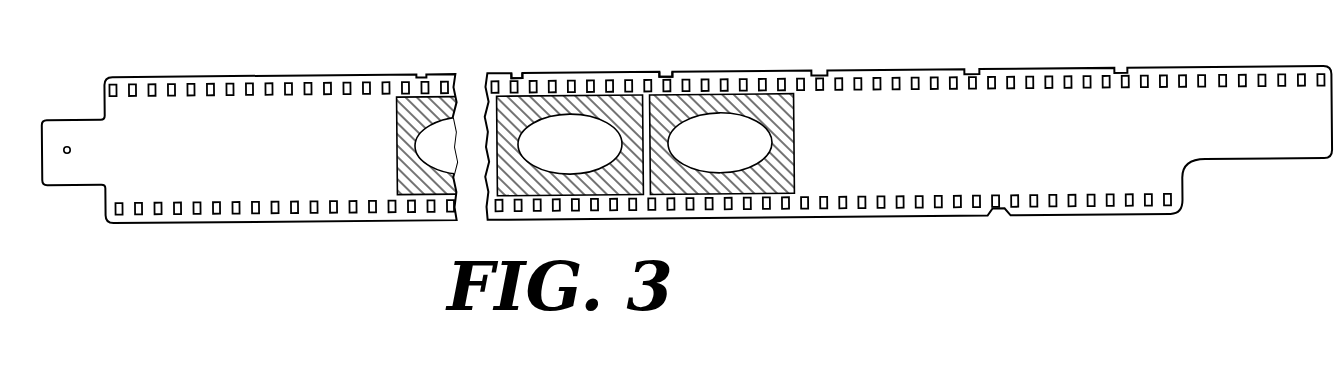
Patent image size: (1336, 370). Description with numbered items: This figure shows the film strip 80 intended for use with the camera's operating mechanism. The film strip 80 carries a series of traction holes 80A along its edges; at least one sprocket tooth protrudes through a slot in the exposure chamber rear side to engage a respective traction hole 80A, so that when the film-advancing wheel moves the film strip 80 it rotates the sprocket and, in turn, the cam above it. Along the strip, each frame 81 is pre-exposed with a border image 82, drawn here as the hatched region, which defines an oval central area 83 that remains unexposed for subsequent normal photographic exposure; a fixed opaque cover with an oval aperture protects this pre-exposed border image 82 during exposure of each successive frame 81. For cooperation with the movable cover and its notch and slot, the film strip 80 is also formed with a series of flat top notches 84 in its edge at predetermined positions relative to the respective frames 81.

The film strip 80 is at (1163, 67).
The traction hole 80A is at (1013, 77).
The frame 81 is at (772, 93).
The border image 82 is at (785, 107).
The oval central area 83 is at (735, 147).
The flat top notches 84 is at (517, 73).